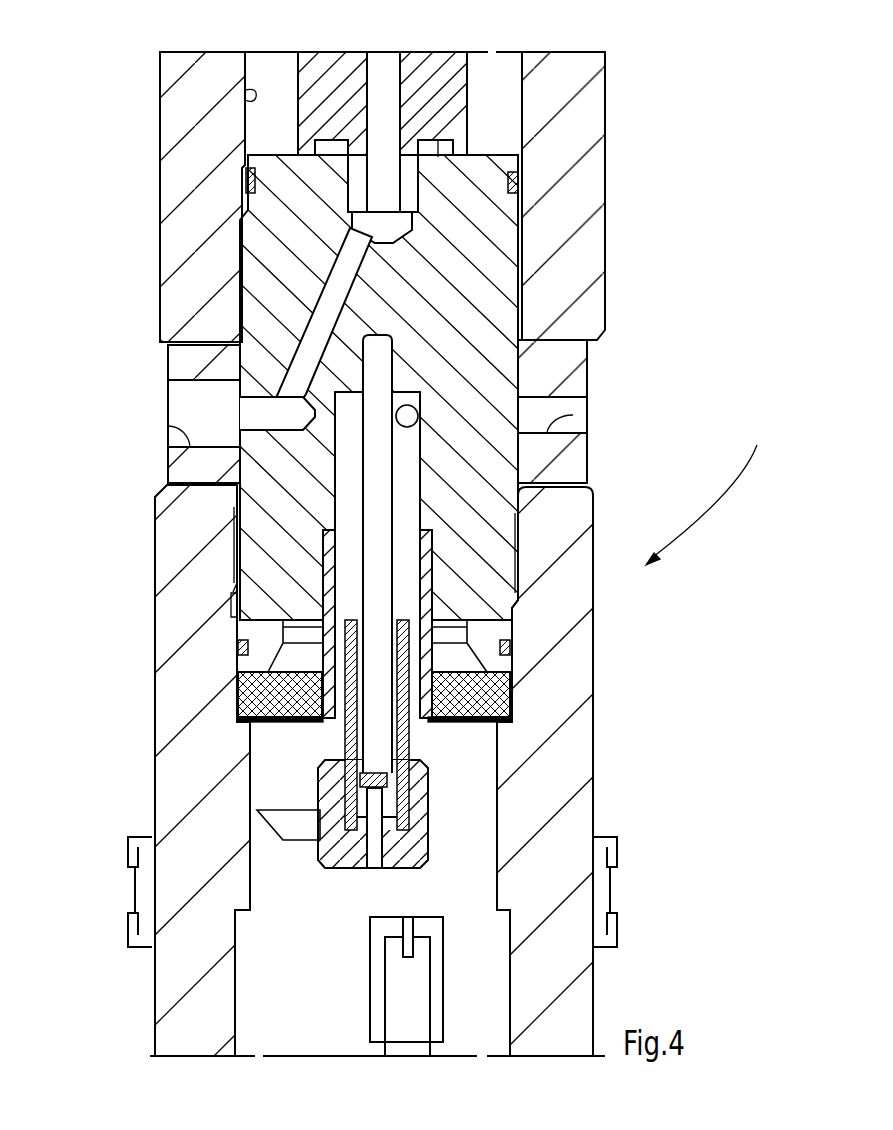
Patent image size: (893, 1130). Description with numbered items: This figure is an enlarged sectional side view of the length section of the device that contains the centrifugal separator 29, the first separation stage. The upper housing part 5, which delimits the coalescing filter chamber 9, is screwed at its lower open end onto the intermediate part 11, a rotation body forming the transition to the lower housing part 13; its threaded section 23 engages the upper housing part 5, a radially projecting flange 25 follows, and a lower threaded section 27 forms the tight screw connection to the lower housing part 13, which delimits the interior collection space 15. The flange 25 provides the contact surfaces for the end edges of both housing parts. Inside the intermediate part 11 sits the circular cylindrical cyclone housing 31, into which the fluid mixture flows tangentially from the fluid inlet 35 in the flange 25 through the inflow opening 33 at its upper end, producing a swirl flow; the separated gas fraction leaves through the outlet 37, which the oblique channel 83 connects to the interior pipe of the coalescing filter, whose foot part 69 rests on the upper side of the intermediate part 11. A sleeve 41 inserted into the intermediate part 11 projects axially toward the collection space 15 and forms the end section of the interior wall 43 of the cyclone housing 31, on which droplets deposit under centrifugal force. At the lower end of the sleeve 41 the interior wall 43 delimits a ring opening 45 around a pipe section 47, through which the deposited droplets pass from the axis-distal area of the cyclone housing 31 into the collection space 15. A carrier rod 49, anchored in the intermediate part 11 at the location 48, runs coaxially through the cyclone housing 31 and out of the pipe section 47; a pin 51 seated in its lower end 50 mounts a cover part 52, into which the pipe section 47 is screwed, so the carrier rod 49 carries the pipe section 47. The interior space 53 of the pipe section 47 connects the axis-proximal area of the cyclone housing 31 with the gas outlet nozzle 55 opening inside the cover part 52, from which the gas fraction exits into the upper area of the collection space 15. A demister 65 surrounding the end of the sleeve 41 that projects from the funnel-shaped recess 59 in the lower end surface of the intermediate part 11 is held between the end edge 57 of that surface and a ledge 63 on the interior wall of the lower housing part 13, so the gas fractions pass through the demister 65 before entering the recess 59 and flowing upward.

The upper housing part 5 is at (575, 150).
The coalescing filter chamber 9 is at (248, 94).
The intermediate part 11 is at (292, 217).
The lower housing part 13 is at (578, 762).
The collection space 15 is at (495, 872).
The threaded section 23 is at (232, 307).
The flange 25 is at (200, 365).
The lower threaded section 27 is at (233, 575).
The centrifugal separator 29 is at (708, 489).
The cyclone housing 31 is at (340, 488).
The inflow opening 33 is at (415, 410).
The fluid inlet 35 is at (573, 415).
The outlet 37 is at (168, 426).
The sleeve 41 is at (425, 652).
The interior wall 43 is at (413, 690).
The ring opening 45 is at (320, 733).
The pipe section 47 is at (407, 733).
The anchoring location 48 is at (393, 352).
The carrier rod 49 is at (383, 503).
The lower end 50 is at (420, 866).
The pin 51 is at (338, 840).
The cover part 52 is at (415, 830).
The interior space 53 is at (353, 732).
The gas outlet nozzle 55 is at (290, 828).
The end edge 57 is at (285, 673).
The funnel-shaped recess 59 is at (278, 647).
The ledge 63 is at (322, 727).
The demister 65 is at (290, 700).
The foot part 69 is at (432, 104).
The oblique channel 83 is at (335, 272).